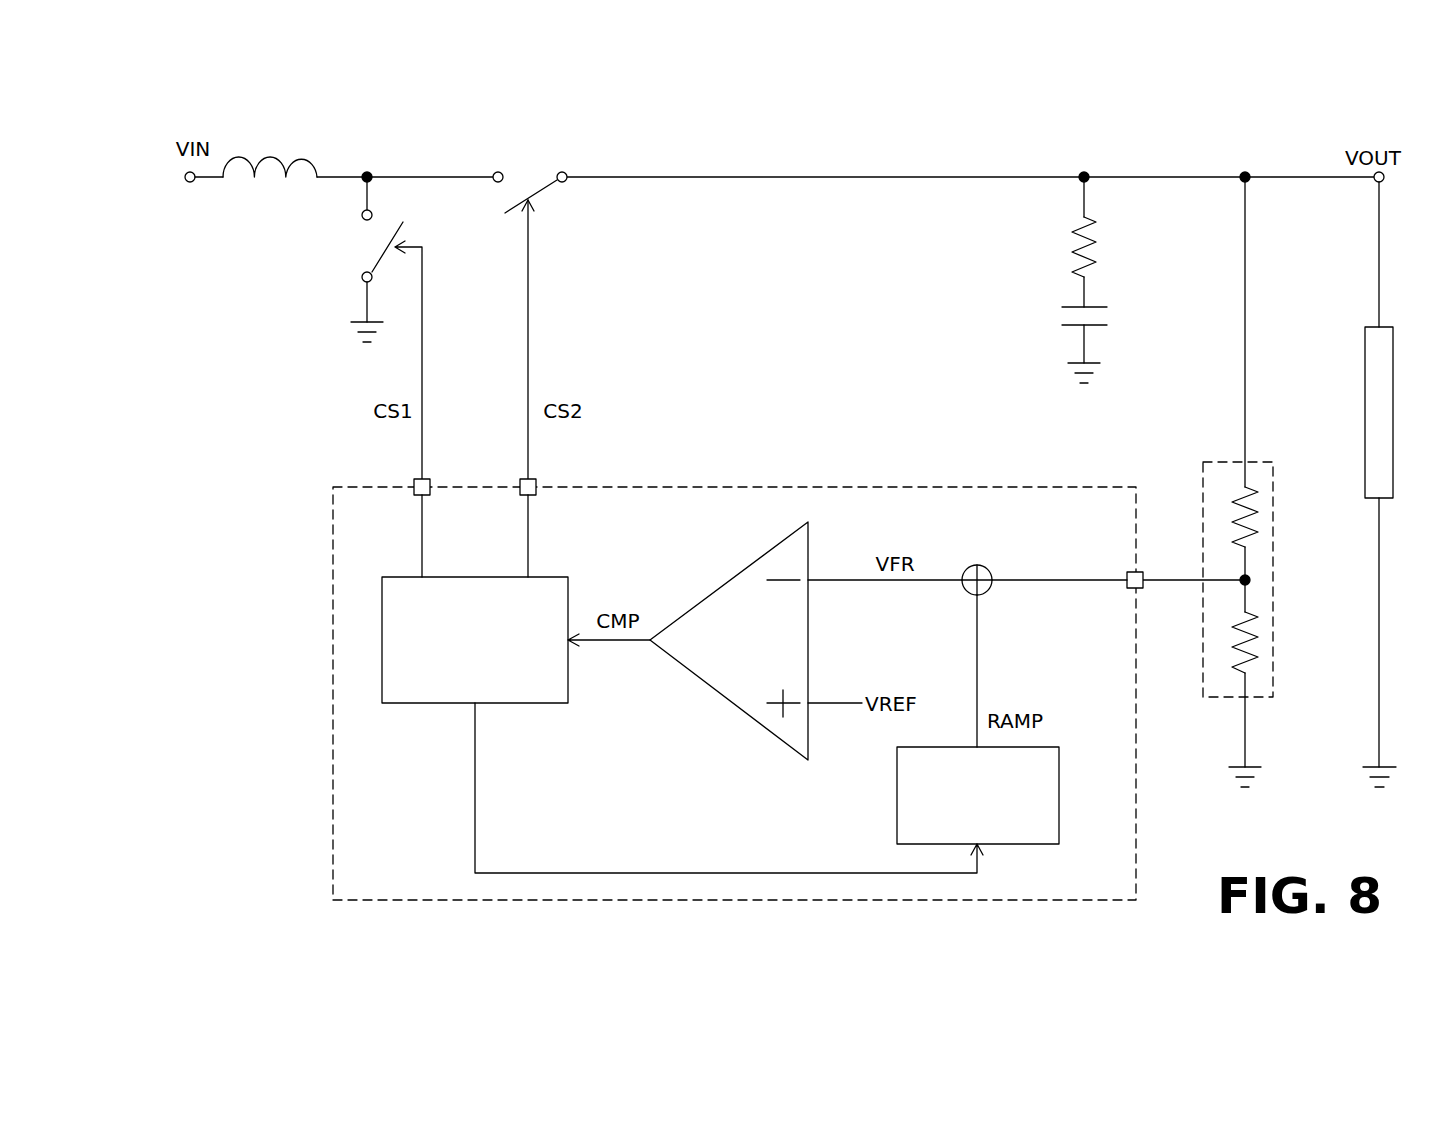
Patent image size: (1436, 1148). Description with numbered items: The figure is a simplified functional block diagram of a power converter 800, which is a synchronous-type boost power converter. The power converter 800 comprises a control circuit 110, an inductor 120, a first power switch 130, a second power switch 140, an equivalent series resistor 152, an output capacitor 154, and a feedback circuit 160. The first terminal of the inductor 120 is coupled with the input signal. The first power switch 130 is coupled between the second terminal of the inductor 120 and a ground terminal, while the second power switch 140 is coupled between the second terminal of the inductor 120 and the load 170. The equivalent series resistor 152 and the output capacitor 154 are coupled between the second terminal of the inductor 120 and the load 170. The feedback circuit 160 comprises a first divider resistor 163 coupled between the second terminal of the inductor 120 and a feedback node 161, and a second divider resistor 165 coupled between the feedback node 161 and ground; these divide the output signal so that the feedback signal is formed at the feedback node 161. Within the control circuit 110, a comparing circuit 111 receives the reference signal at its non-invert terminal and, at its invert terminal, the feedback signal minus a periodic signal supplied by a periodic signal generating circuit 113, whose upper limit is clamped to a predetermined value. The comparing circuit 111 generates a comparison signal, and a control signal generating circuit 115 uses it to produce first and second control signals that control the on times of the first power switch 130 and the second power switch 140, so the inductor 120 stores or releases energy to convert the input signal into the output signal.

The power converter 800 is at (1268, 142).
The control circuit 110 is at (703, 689).
The comparing circuit 111 is at (730, 700).
The periodic signal generating circuit 113 is at (1060, 795).
The control signal generating circuit 115 is at (452, 705).
The inductor 120 is at (272, 150).
The first power switch 130 is at (363, 245).
The second power switch 140 is at (530, 170).
The equivalent series resistor 152 is at (1070, 247).
The output capacitor 154 is at (1067, 315).
The feedback circuit 160 is at (1231, 484).
The feedback node 161 is at (1252, 580).
The first divider resistor 163 is at (1230, 518).
The second divider resistor 165 is at (1230, 643).
The load 170 is at (1365, 460).